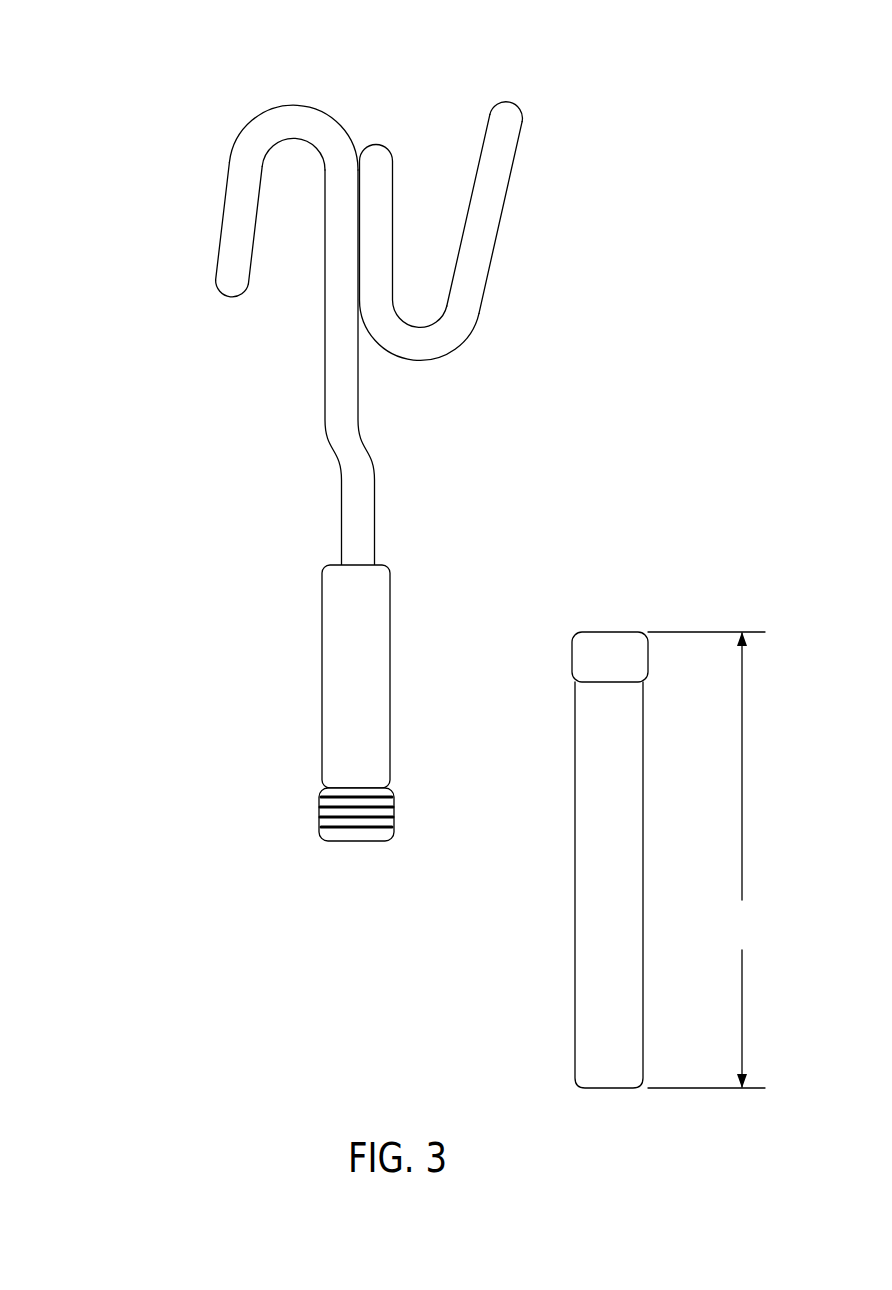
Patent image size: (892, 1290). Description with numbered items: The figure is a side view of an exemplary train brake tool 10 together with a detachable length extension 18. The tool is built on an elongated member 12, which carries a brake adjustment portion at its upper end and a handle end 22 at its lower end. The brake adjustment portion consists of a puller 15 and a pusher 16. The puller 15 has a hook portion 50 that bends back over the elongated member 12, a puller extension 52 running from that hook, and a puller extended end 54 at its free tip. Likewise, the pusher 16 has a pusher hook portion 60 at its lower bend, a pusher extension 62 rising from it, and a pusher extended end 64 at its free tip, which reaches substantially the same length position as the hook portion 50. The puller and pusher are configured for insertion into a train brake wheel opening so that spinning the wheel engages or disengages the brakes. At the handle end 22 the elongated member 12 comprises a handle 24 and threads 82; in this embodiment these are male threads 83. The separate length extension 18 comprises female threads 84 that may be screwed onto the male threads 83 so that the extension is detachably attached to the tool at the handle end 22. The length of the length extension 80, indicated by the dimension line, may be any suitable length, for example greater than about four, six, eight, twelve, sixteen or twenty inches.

The train brake tool 10 is at (190, 82).
The elongated member 12 is at (347, 482).
The puller 15 is at (224, 174).
The pusher 16 is at (495, 280).
The length extension 18 is at (602, 778).
The handle end 22 is at (370, 843).
The handle 24 is at (358, 715).
The hook portion 50 is at (293, 127).
The puller extension 52 is at (226, 220).
The puller extended end 54 is at (223, 298).
The pusher hook portion 60 is at (437, 345).
The pusher extension 62 is at (485, 205).
The pusher extended end 64 is at (505, 117).
The length of the length extension 80 is at (706, 860).
The threads 82 is at (320, 805).
The male threads 83 is at (348, 825).
The female threads 84 is at (618, 632).